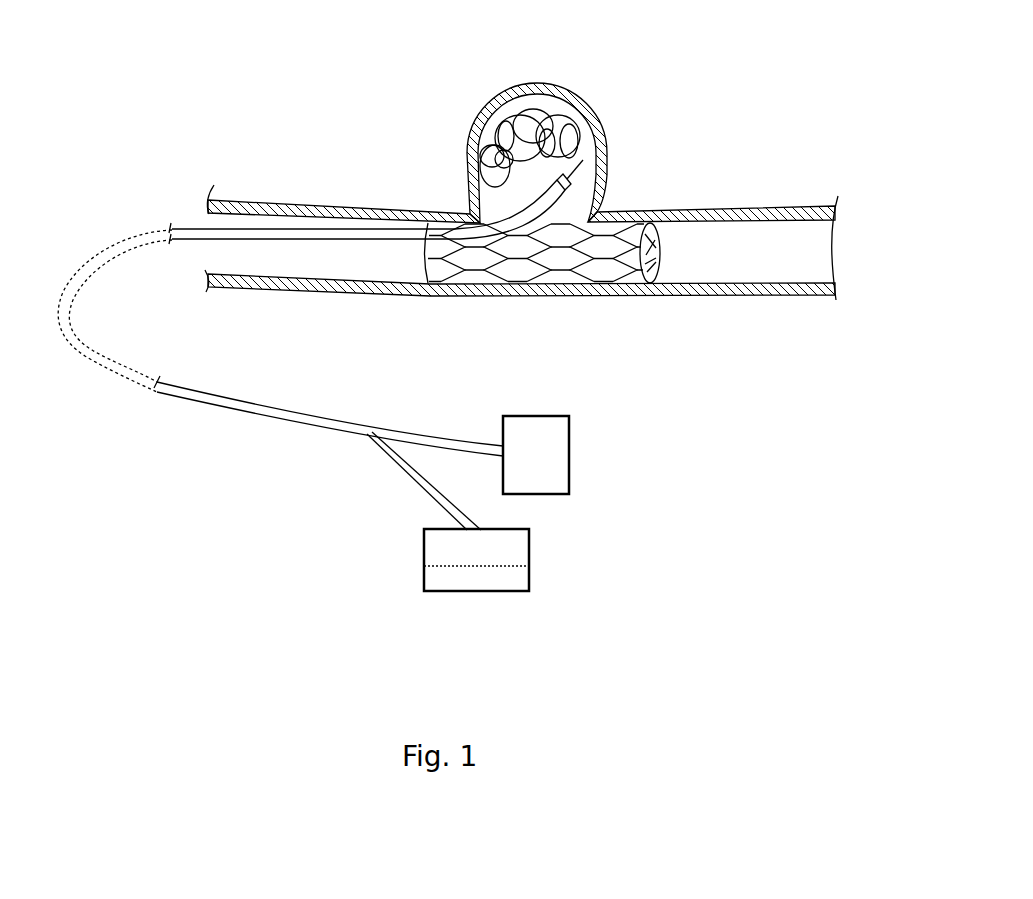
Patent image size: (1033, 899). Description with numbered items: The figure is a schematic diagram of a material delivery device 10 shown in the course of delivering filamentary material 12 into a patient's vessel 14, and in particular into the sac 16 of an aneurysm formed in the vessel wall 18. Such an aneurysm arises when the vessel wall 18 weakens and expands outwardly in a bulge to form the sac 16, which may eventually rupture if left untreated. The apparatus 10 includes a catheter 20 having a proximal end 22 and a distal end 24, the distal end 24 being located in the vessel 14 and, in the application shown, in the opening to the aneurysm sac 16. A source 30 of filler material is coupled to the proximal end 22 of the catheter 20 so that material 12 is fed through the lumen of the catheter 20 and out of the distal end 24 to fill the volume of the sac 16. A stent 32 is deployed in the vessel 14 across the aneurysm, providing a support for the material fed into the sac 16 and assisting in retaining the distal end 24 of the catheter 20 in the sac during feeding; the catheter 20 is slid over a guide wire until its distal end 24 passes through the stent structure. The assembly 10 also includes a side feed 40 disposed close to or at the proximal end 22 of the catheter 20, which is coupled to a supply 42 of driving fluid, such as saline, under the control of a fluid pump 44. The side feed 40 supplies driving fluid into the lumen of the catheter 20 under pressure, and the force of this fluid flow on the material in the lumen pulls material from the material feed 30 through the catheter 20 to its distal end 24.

The material delivery device 10 is at (254, 470).
The filamentary material 12 is at (540, 112).
The vessel 14 is at (762, 344).
The sac 16 is at (487, 100).
The vessel wall 18 is at (712, 210).
The catheter 20 is at (183, 400).
The proximal end 22 is at (423, 398).
The distal end 24 is at (568, 188).
The source of filler material 30 is at (569, 455).
The stent 32 is at (597, 266).
The side feed 40 is at (377, 455).
The supply of driving fluid 42 is at (529, 545).
The fluid pump 44 is at (531, 580).